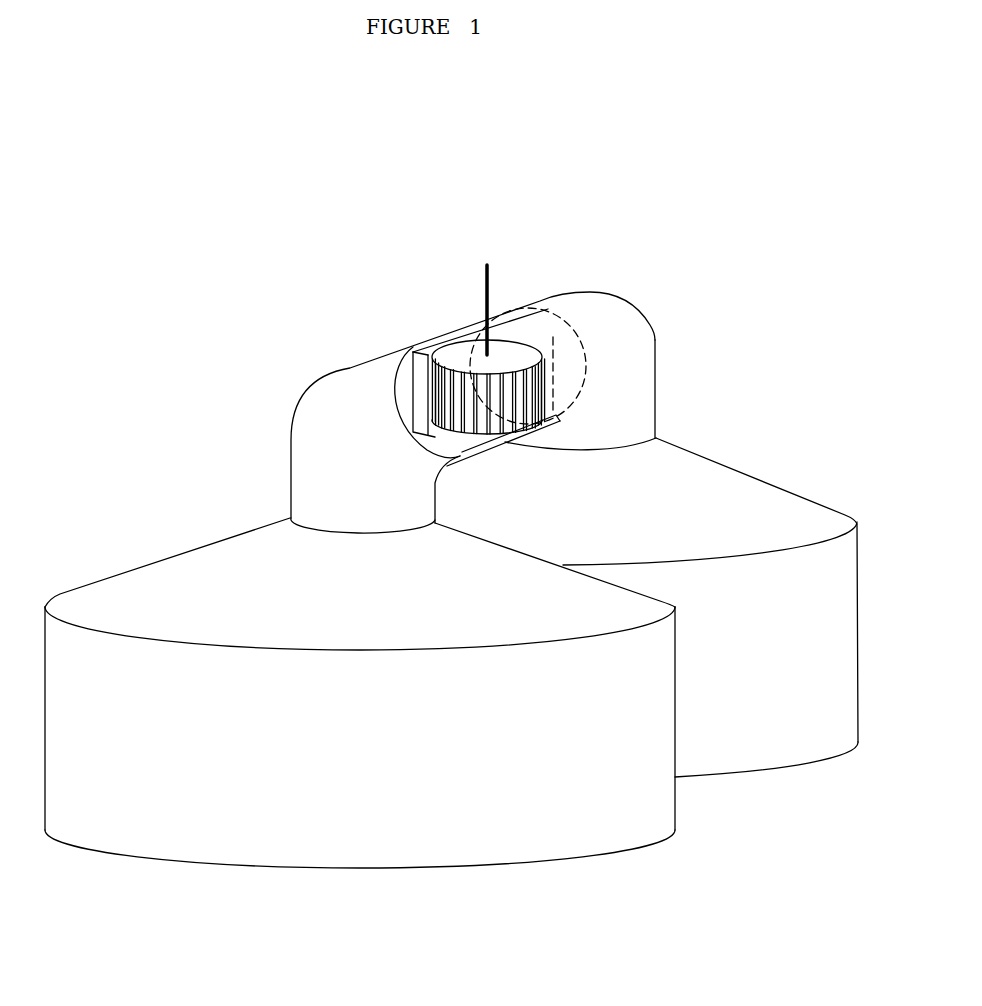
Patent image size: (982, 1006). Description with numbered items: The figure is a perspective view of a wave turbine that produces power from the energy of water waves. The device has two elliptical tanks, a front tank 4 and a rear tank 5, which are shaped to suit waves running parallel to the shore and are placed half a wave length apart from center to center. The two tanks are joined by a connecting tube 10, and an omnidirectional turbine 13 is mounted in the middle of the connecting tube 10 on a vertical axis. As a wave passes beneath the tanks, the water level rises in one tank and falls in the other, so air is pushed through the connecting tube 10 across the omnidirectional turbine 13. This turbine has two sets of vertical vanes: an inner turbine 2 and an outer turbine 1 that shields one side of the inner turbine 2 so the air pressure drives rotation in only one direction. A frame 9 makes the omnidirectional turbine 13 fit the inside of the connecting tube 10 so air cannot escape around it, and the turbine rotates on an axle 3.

The outer turbine 1 is at (551, 384).
The inner turbine 2 is at (513, 357).
The axle 3 is at (488, 307).
The front tank 4 is at (105, 581).
The rear tank 5 is at (777, 473).
The frame 9 is at (399, 413).
The connecting tube 10 is at (294, 459).
The omnidirectional turbine 13 is at (503, 346).